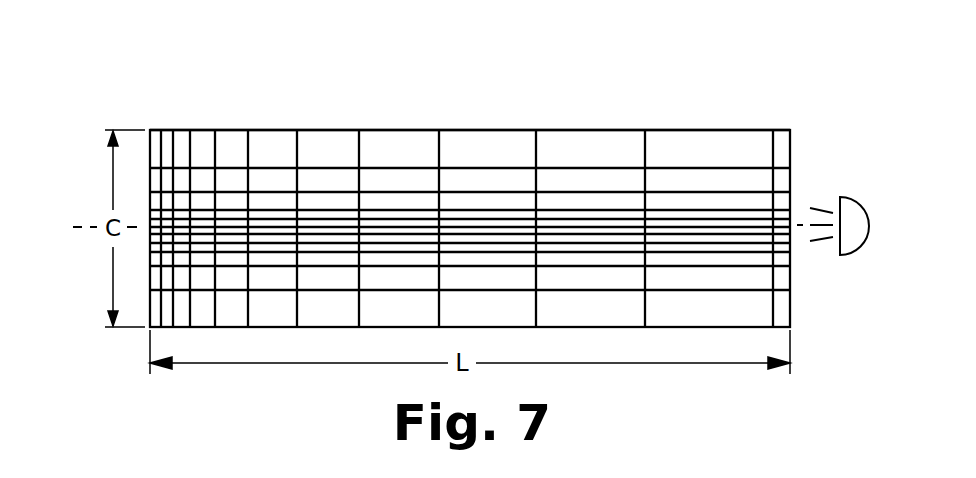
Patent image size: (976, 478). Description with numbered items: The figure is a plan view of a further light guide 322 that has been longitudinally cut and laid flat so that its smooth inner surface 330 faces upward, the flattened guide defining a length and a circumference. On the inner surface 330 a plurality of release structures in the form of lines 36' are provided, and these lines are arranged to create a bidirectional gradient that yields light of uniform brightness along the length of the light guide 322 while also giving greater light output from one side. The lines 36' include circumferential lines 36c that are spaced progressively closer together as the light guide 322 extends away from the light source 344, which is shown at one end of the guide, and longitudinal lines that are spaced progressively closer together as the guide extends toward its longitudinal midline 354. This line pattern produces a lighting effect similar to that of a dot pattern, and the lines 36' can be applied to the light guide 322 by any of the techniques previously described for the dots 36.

The light guide 322 is at (470, 173).
The smooth inner surface 330 is at (327, 147).
The dots 36 is at (470, 122).
The lines 36' is at (376, 202).
The circumferential lines 36c is at (360, 150).
The light source 344 is at (852, 208).
The longitudinal midline 354 is at (77, 229).